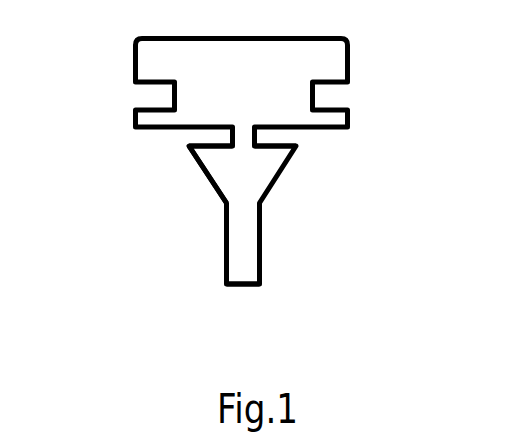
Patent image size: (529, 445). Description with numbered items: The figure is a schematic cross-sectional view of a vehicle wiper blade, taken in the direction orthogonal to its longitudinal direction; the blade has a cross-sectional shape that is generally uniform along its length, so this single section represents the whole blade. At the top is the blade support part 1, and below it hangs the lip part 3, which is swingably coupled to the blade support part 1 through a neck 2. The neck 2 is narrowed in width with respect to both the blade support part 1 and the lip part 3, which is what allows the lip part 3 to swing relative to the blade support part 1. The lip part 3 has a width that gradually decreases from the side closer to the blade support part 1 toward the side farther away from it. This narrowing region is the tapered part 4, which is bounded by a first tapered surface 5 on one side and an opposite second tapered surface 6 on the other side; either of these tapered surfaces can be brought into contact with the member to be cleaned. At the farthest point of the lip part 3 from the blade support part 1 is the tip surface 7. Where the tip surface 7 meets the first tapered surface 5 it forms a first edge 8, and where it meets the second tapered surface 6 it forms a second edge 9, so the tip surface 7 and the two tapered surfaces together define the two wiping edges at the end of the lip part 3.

The blade support part 1 is at (282, 59).
The neck 2 is at (242, 137).
The lip part 3 is at (243, 181).
The tapered part 4 is at (212, 186).
The first tapered surface 5 is at (262, 242).
The second tapered surface 6 is at (222, 240).
The tip surface 7 is at (238, 284).
The first edge 8 is at (260, 285).
The second edge 9 is at (227, 285).